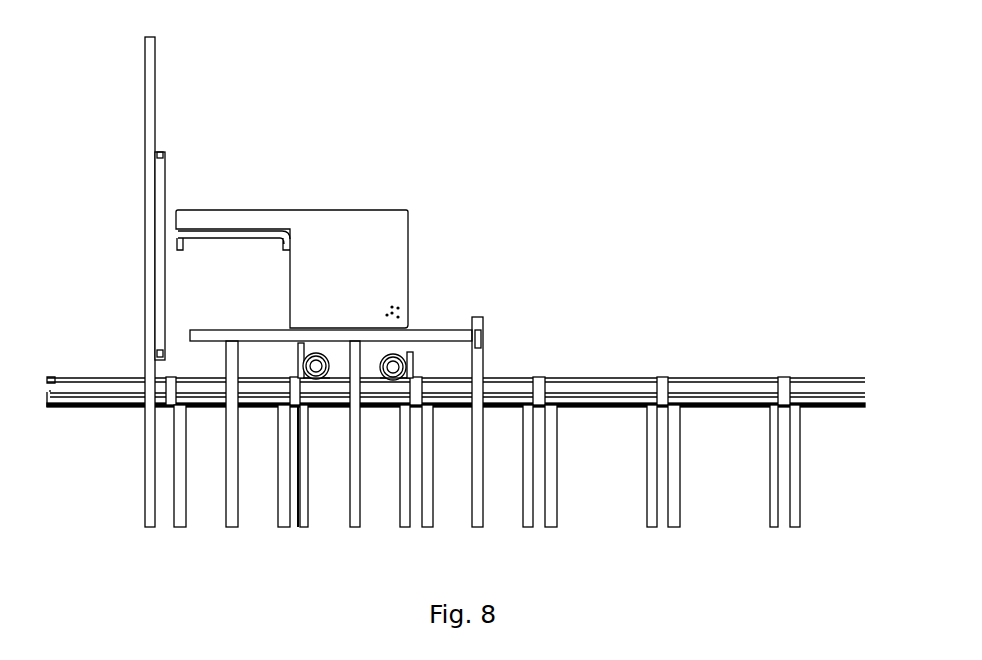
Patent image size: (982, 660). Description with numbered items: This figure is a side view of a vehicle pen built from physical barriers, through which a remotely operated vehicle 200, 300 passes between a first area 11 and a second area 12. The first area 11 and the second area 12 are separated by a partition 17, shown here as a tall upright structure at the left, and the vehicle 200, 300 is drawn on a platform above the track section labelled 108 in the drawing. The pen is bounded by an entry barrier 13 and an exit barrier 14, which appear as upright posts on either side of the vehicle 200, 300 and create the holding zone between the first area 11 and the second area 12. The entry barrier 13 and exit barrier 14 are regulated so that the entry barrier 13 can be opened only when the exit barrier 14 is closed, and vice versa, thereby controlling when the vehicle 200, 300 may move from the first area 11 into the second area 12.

The first area 11 is at (587, 292).
The second area 12 is at (97, 345).
The entry barrier 13 is at (269, 339).
The exit barrier 14 is at (157, 232).
The partition 17 is at (158, 78).
The conveyor rail 108 is at (848, 382).
The remotely operated vehicle 200 is at (324, 217).
The remotely operated vehicle 300 is at (325, 265).